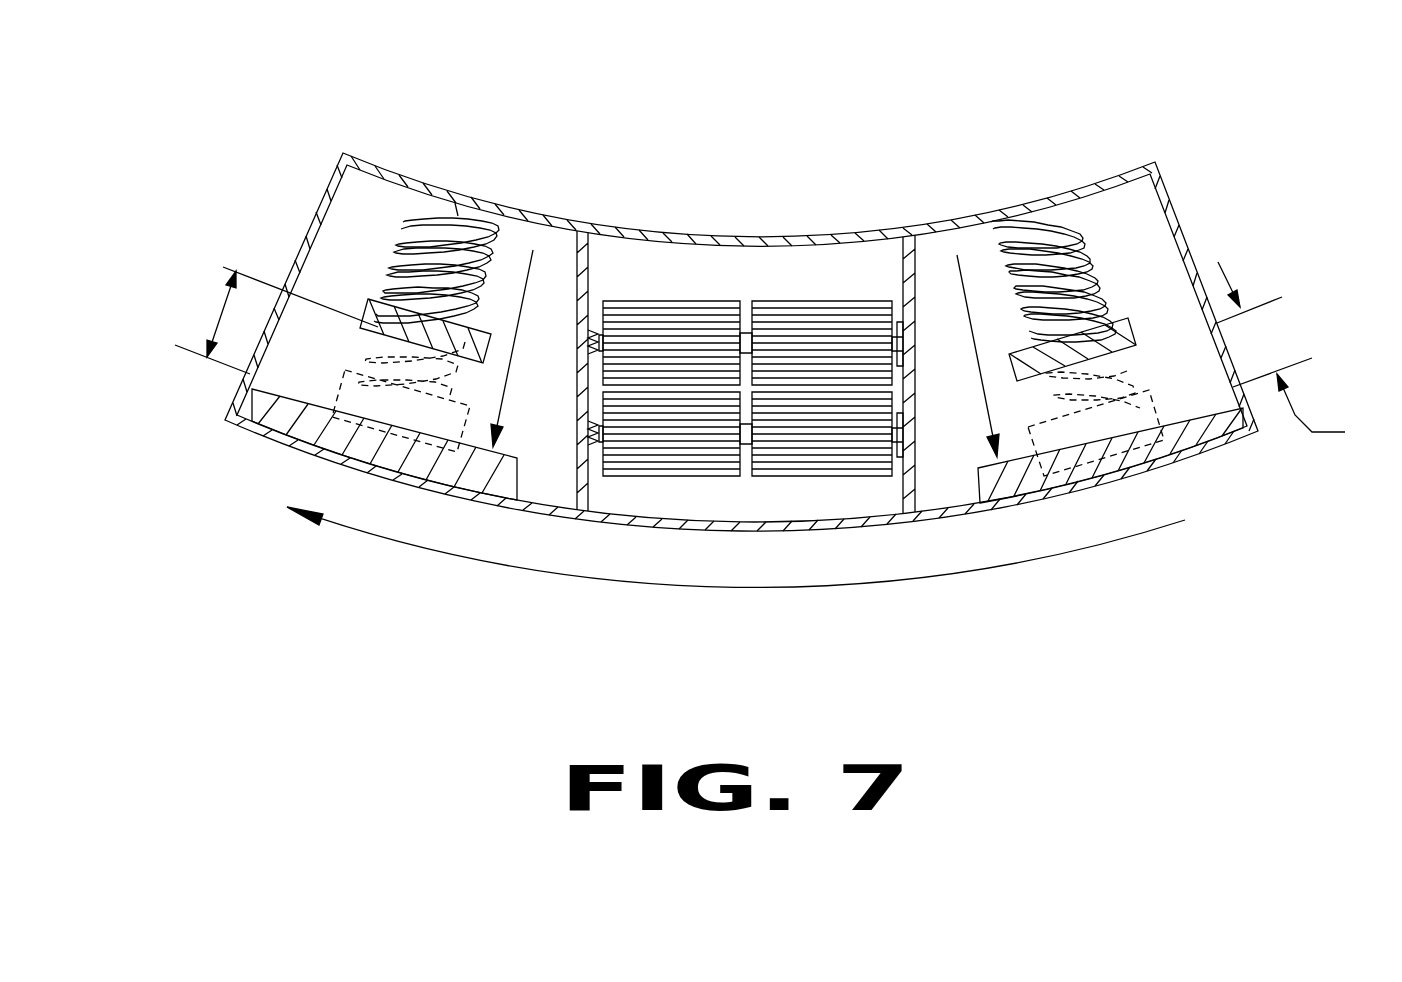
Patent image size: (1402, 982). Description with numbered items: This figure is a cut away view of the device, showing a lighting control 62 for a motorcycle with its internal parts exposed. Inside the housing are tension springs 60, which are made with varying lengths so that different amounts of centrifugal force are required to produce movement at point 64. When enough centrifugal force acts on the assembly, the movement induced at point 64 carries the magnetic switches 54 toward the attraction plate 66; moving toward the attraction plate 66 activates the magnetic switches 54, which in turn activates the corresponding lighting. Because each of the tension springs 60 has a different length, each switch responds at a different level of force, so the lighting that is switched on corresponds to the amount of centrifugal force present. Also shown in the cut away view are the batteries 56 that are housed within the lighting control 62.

The magnetic switches 54 is at (370, 322).
The batteries 56 is at (777, 300).
The tension springs 60 is at (1095, 277).
The lighting control 62 is at (650, 212).
The point 64 is at (202, 356).
The attraction plate 66 is at (1028, 500).